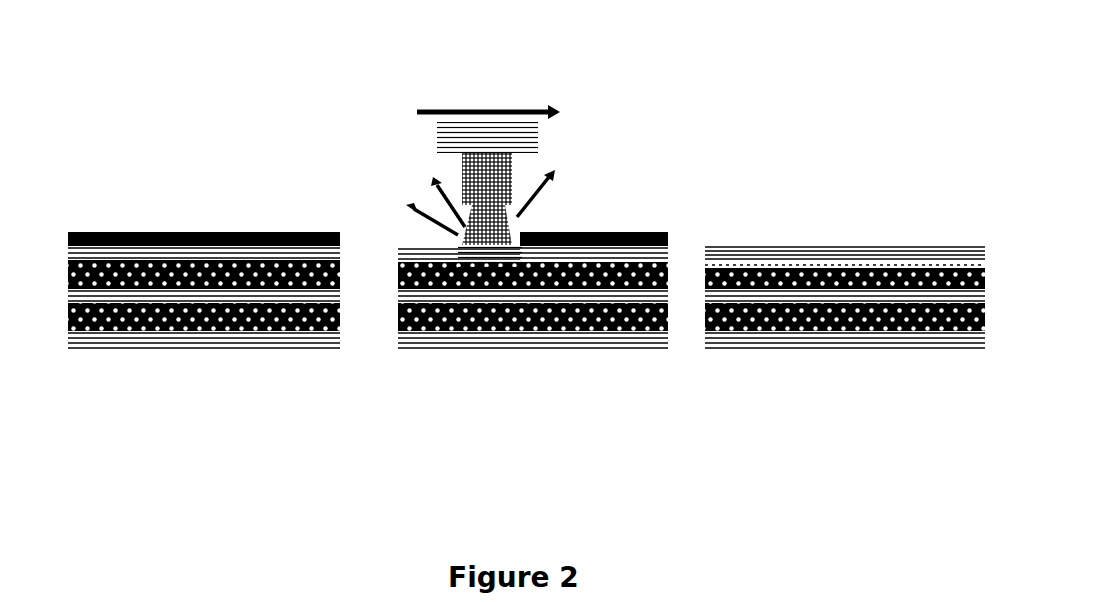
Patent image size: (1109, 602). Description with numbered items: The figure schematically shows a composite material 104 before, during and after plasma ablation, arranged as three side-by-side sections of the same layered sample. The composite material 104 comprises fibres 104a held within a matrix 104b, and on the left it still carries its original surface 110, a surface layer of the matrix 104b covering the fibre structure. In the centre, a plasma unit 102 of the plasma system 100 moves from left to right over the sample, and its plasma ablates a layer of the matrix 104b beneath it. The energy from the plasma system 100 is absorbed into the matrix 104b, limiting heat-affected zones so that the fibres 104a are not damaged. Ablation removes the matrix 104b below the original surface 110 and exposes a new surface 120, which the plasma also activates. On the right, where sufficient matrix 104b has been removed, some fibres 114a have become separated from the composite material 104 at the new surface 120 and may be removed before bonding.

The plasma system 100 is at (488, 93).
The plasma unit 102 is at (506, 156).
The composite material 104 is at (140, 223).
The fibres 104a is at (245, 315).
The matrix 104b is at (308, 238).
The original surface 110 is at (298, 230).
The separated fibres 114a is at (955, 247).
The new surface 120 is at (405, 268).